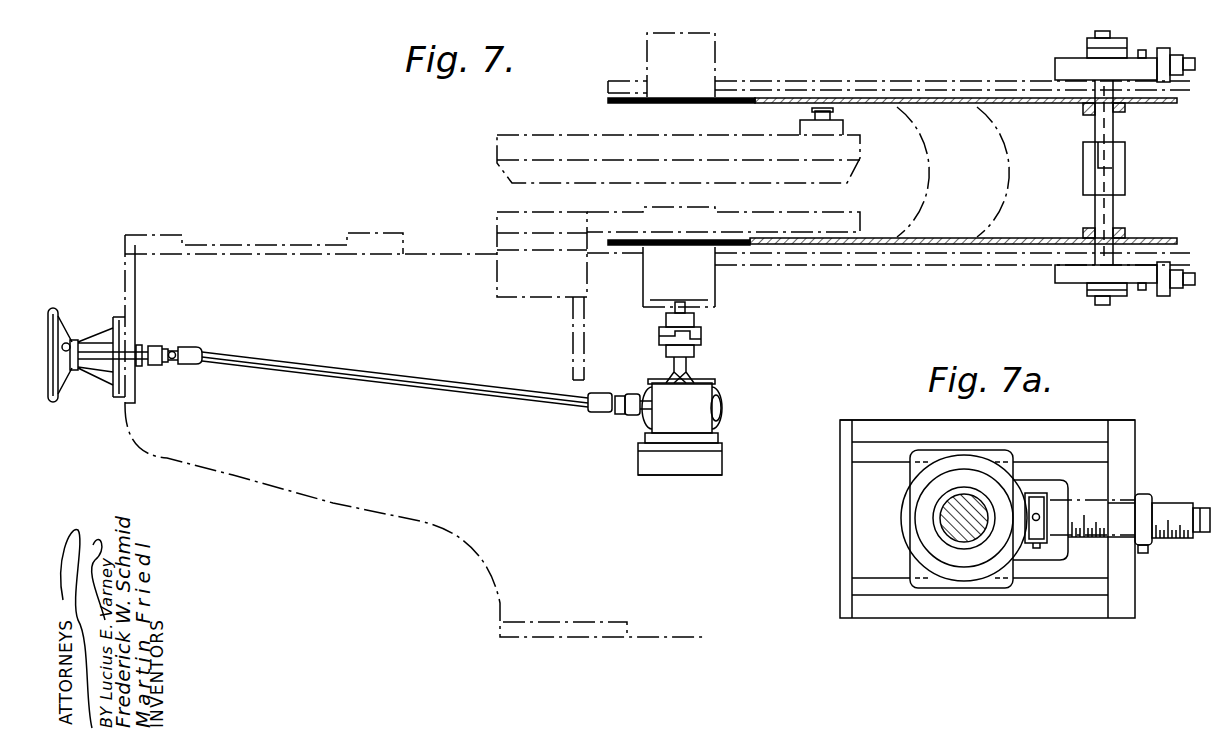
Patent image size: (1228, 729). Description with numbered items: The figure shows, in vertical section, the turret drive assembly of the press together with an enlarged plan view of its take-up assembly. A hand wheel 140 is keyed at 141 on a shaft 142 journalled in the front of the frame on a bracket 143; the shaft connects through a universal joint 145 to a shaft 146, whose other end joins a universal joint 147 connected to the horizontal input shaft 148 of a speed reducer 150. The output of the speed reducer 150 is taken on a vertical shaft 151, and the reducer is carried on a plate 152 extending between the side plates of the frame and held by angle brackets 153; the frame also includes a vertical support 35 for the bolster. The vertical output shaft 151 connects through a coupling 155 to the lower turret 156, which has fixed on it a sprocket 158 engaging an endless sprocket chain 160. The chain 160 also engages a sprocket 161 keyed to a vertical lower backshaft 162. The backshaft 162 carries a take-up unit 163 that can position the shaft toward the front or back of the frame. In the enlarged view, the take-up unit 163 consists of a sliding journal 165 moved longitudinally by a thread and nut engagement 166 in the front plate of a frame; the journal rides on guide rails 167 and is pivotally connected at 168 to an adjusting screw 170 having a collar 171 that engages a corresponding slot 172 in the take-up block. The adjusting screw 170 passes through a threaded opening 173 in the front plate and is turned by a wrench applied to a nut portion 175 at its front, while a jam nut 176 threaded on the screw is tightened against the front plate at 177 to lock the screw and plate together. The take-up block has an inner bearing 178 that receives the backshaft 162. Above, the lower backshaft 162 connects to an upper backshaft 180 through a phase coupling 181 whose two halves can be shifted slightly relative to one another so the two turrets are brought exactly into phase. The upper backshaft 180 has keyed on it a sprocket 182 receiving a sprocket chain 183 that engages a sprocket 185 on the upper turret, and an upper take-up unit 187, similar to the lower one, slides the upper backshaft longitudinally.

In FIG. 7, the support 35 is at (518, 267).
In FIG. 7, the hand wheel 140 is at (53, 310).
In FIG. 7, the key 141 is at (68, 342).
In FIG. 7, the shaft 142 is at (93, 355).
In FIG. 7, the bracket 143 is at (113, 364).
In FIG. 7, the universal joint 145 is at (167, 345).
In FIG. 7, the shaft 146 is at (260, 365).
In FIG. 7, the universal joint 147 is at (598, 408).
In FIG. 7, the shaft 148 is at (637, 413).
In FIG. 7, the speed reducer 150 is at (690, 413).
In FIG. 7, the vertical shaft 151 is at (683, 369).
In FIG. 7, the plate 152 is at (710, 462).
In FIG. 7, the angle brackets 153 is at (687, 475).
In FIG. 7, the coupling 155 is at (690, 333).
In FIG. 7, the lower turret 156 is at (853, 200).
In FIG. 7, the sprocket 158 is at (728, 247).
In FIG. 7, the sprocket chain 160 is at (957, 240).
In FIG. 7, the sprocket 161 is at (1090, 237).
In FIG. 7, the lower backshaft 162 is at (1110, 210).
In FIG. 7A, the lower backshaft 162 is at (952, 517).
In FIG. 7, the take-up unit 163 is at (1103, 297).
In FIG. 7A, the take-up unit 163 is at (918, 417).
In FIG. 7A, the sliding journal 165 is at (1053, 548).
In FIG. 7A, the thread and nut engagement 166 is at (1147, 503).
In FIG. 7A, the guide rails 167 is at (870, 590).
In FIG. 7A, the pivotal connection 168 is at (1037, 514).
In FIG. 7A, the adjusting screw 170 is at (1082, 507).
In FIG. 7A, the collar 171 is at (1032, 493).
In FIG. 7A, the slot 172 is at (1032, 545).
In FIG. 7A, the threaded opening 173 is at (1115, 527).
In FIG. 7A, the nut portion 175 is at (1197, 533).
In FIG. 7A, the jam nut 176 is at (1143, 553).
In FIG. 7A, the front plate contact 177 is at (1120, 492).
In FIG. 7A, the inner bearing 178 is at (943, 498).
In FIG. 7, the upper backshaft 180 is at (1103, 127).
In FIG. 7, the phase coupling 181 is at (1115, 153).
In FIG. 7, the sprocket 182 is at (1138, 105).
In FIG. 7, the sprocket chain 183 is at (992, 98).
In FIG. 7, the sprocket 185 is at (722, 100).
In FIG. 7, the upper take-up unit 187 is at (1117, 53).